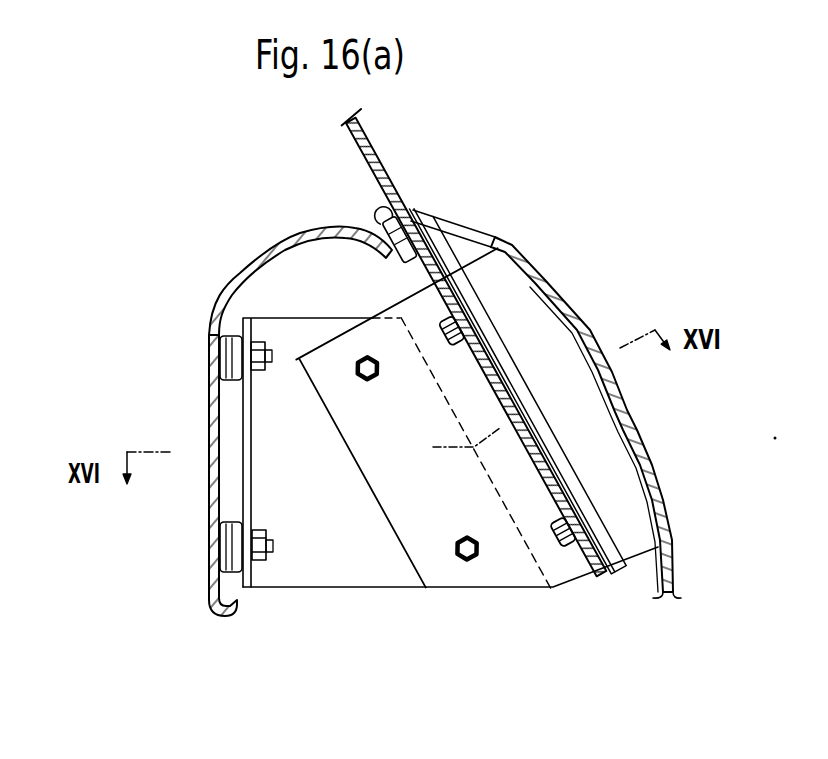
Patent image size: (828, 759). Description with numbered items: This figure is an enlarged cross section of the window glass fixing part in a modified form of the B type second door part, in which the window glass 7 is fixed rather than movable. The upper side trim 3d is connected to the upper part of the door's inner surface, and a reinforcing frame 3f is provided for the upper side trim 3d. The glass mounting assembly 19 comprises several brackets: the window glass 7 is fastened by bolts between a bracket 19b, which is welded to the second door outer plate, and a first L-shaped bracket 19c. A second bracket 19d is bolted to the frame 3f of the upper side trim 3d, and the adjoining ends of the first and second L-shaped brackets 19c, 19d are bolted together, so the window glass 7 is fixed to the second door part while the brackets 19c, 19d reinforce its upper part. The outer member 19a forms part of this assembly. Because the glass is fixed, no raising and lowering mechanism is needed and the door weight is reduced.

The window glass 7 is at (356, 139).
The upper side trim 3d is at (258, 263).
The frame 3f is at (212, 312).
The frame 19 is at (529, 196).
The outer curved frame member 19a is at (585, 338).
The bracket 19b is at (503, 293).
The first L-shaped bracket 19c is at (517, 566).
The second bracket 19d is at (270, 400).